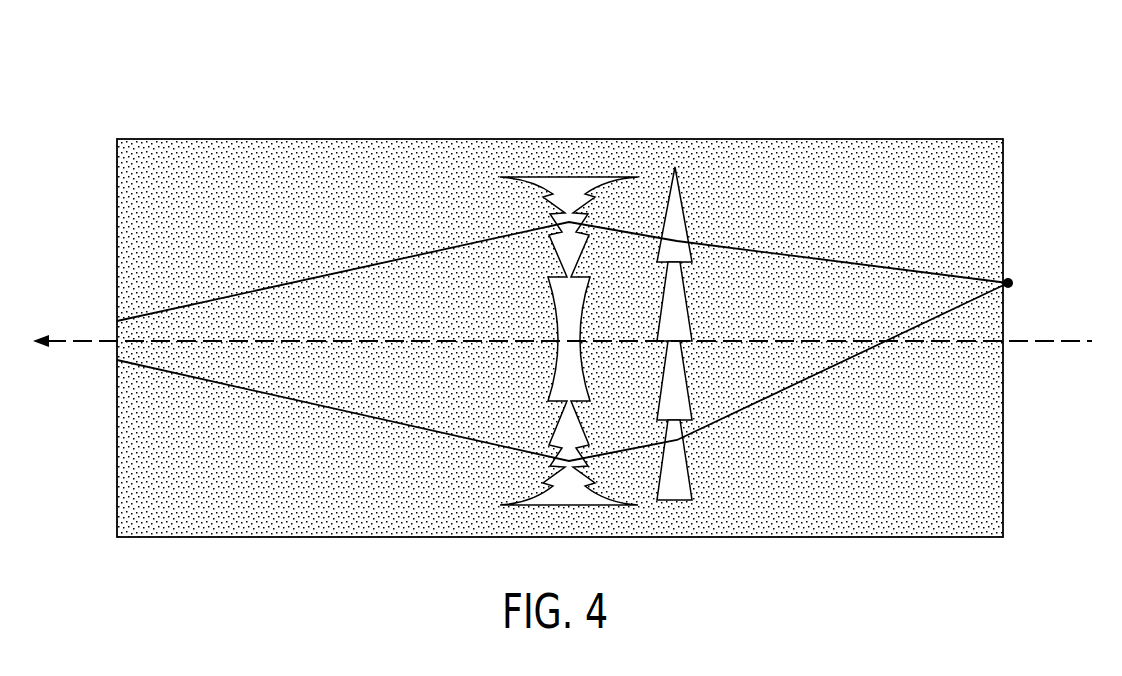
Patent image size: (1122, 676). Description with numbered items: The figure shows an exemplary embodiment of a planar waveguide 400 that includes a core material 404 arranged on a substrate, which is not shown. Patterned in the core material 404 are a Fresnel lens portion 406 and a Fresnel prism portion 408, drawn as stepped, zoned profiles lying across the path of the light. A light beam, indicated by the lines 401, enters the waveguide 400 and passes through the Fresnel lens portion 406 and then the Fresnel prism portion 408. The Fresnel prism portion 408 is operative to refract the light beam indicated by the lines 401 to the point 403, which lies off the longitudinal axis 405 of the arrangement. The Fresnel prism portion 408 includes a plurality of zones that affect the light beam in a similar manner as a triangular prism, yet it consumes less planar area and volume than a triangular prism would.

The planar waveguide 400 is at (966, 85).
The lines 401 is at (305, 280).
The point 403 is at (1013, 283).
The core material 404 is at (988, 185).
The longitudinal axis 405 is at (1085, 344).
The Fresnel lens portion 406 is at (563, 187).
The Fresnel prism portion 408 is at (675, 187).